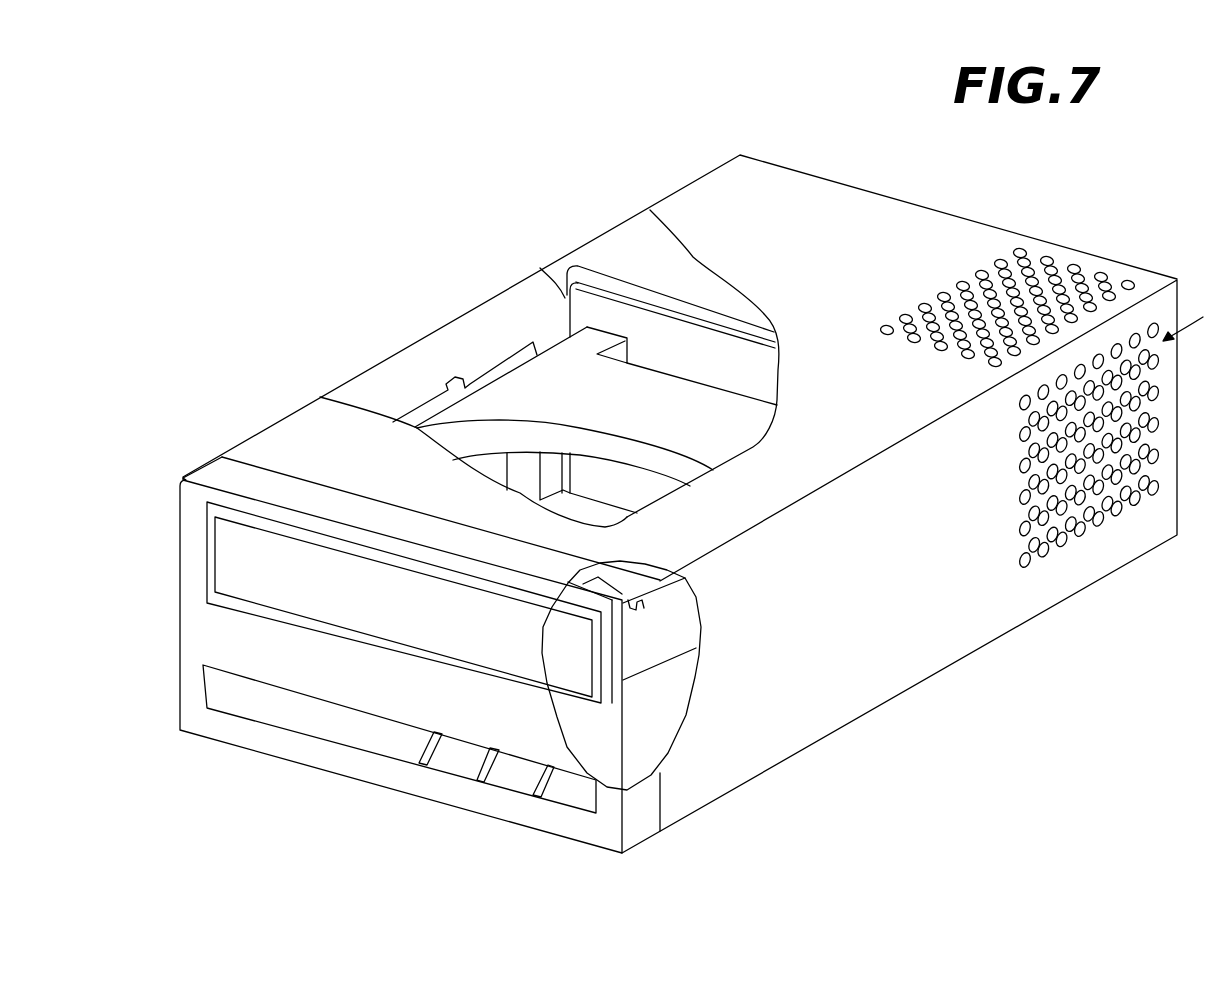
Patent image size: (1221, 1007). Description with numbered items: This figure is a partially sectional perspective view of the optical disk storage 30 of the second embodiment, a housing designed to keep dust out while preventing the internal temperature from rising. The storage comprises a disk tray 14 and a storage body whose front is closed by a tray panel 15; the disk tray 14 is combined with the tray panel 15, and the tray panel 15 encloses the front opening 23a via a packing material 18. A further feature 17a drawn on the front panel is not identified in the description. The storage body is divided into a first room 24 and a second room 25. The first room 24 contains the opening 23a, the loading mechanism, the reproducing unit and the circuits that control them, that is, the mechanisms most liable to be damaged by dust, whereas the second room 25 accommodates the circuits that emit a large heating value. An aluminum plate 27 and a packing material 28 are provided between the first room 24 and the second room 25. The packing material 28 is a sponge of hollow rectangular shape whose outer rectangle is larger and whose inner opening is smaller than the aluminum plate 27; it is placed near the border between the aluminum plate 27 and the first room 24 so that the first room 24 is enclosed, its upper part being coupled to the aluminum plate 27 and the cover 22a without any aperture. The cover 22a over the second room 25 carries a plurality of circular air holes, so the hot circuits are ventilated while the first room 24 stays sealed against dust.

The disk tray 14 is at (520, 394).
The tray panel 15 is at (477, 643).
The cartridge insertion opening 17a is at (213, 517).
The packing material 18 is at (617, 678).
The cover 22a is at (827, 207).
The opening 23a is at (220, 488).
The first room 24 is at (405, 382).
The second room 25 is at (648, 233).
The aluminum plate 27 is at (580, 302).
The packing material 28 is at (603, 270).
The optical disk storage 30 is at (323, 258).